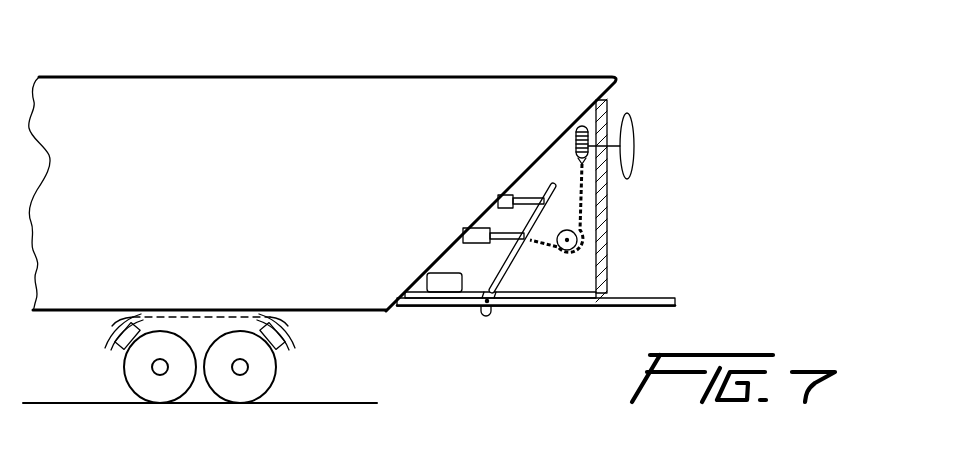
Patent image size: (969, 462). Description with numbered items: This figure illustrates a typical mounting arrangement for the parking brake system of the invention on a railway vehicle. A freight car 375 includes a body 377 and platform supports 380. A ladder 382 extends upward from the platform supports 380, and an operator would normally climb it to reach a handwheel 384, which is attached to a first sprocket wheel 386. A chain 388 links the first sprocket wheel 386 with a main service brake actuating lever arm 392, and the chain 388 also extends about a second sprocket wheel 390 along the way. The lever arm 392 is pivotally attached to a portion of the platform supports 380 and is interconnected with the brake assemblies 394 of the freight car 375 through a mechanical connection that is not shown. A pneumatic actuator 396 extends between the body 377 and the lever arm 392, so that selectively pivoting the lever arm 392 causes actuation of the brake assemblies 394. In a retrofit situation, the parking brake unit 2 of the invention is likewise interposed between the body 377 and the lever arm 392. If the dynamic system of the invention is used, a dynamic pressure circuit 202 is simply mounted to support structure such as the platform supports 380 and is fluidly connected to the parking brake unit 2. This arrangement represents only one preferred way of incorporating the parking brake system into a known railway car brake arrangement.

The freight car 375 is at (560, 72).
The body 377 is at (210, 190).
The handwheel 384 is at (634, 118).
The first sprocket wheel 386 is at (576, 133).
The chain 388 is at (607, 192).
The ladder 382 is at (603, 220).
The second sprocket wheel 390 is at (580, 248).
The pneumatic actuator 396 is at (496, 200).
The parking brake unit 2 is at (461, 237).
The dynamic pressure circuit 202 is at (426, 283).
The brake assemblies 394 is at (303, 333).
The main service brake actuating lever arm 392 is at (487, 313).
The platform supports 380 is at (572, 307).